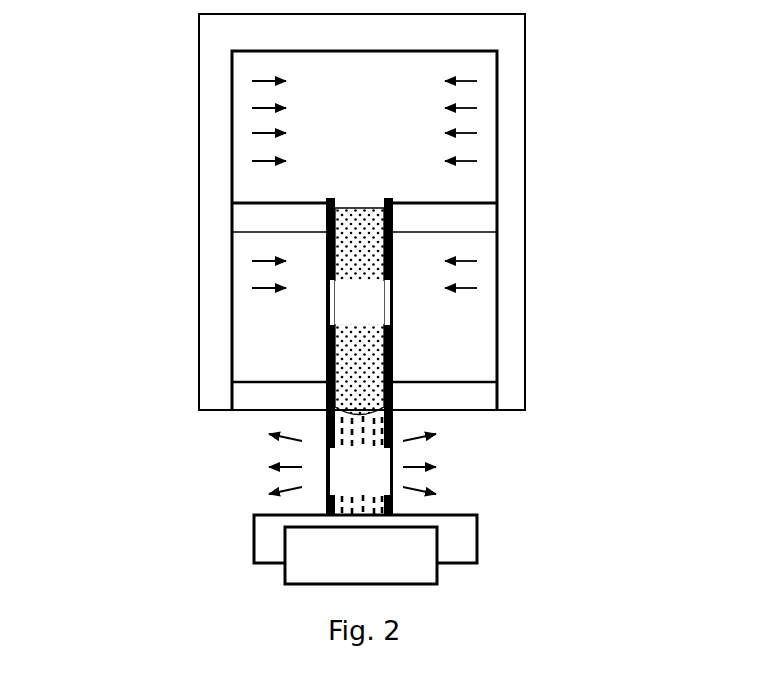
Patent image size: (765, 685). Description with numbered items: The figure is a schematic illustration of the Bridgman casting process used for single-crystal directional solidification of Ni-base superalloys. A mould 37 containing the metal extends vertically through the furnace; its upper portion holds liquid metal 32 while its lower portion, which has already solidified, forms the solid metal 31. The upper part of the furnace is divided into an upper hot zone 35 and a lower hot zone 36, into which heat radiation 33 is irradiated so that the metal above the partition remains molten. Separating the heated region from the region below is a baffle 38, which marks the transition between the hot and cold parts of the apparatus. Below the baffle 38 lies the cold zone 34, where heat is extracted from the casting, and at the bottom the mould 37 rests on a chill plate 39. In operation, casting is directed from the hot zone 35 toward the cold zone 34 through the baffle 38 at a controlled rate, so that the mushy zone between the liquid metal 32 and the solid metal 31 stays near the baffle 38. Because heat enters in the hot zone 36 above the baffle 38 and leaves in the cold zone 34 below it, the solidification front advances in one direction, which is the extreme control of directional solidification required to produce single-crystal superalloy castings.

The solid metal 31 is at (362, 465).
The liquid metal 32 is at (359, 311).
The heat radiation 33 is at (364, 230).
The cold zone 34 is at (343, 464).
The upper hot zone 35 is at (247, 187).
The lower hot zone 36 is at (248, 317).
The mould 37 is at (393, 330).
The baffle 38 is at (467, 390).
The chill plate 39 is at (365, 549).